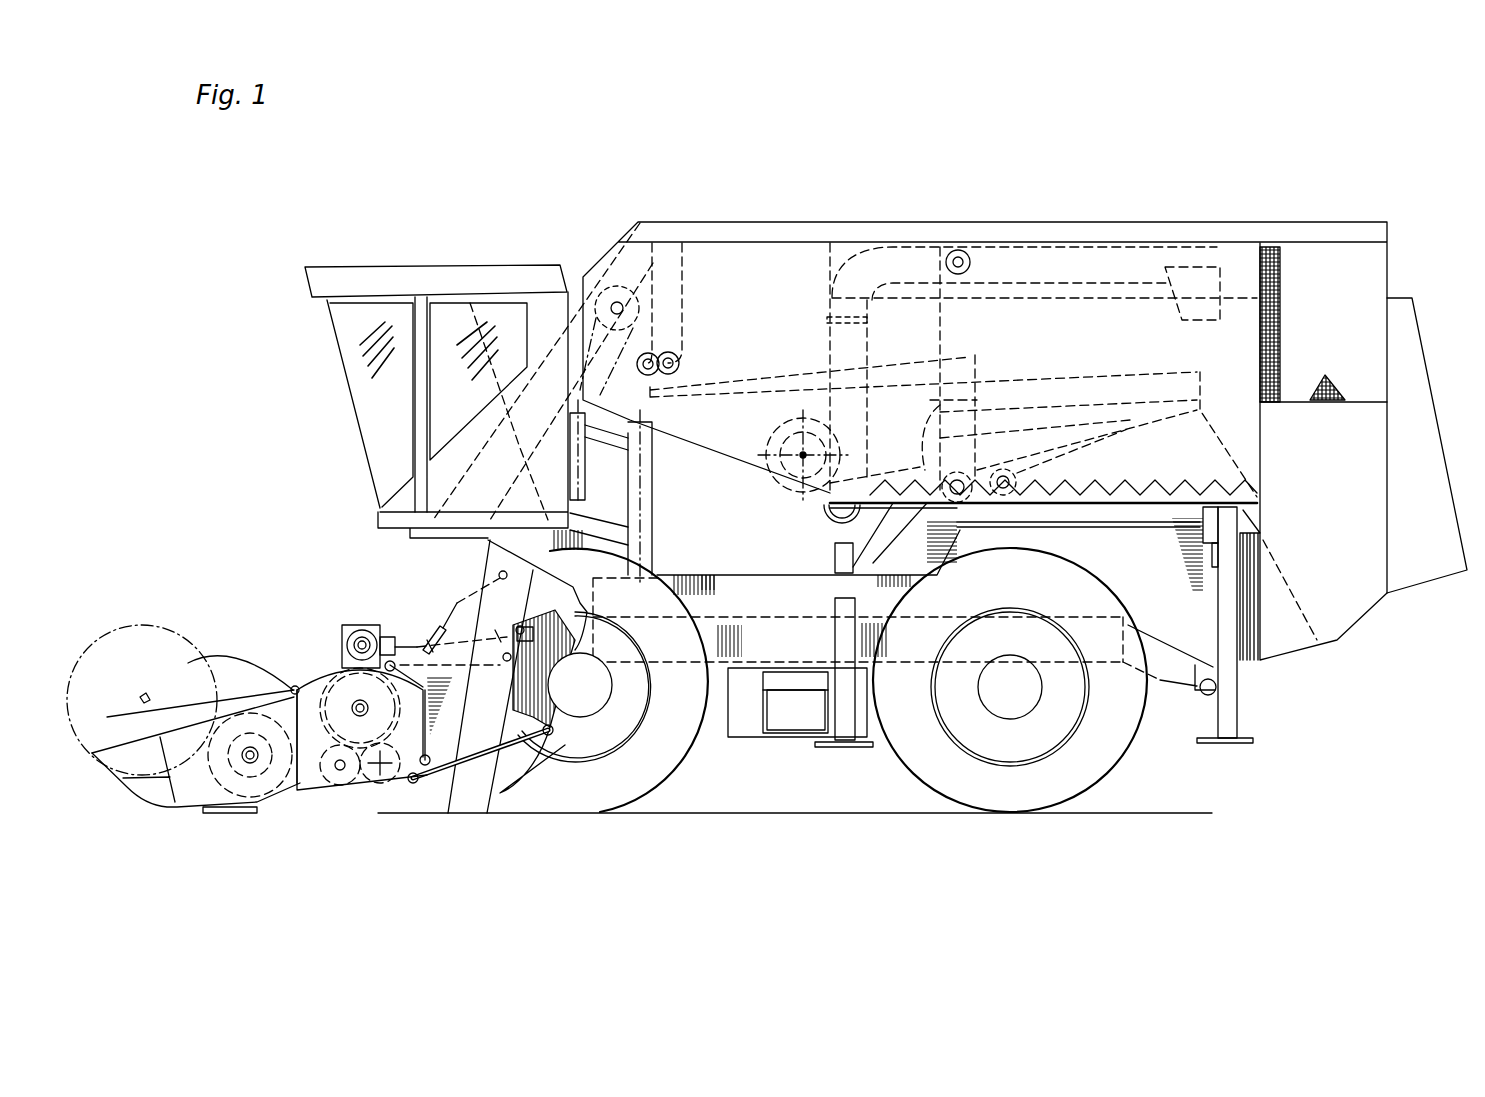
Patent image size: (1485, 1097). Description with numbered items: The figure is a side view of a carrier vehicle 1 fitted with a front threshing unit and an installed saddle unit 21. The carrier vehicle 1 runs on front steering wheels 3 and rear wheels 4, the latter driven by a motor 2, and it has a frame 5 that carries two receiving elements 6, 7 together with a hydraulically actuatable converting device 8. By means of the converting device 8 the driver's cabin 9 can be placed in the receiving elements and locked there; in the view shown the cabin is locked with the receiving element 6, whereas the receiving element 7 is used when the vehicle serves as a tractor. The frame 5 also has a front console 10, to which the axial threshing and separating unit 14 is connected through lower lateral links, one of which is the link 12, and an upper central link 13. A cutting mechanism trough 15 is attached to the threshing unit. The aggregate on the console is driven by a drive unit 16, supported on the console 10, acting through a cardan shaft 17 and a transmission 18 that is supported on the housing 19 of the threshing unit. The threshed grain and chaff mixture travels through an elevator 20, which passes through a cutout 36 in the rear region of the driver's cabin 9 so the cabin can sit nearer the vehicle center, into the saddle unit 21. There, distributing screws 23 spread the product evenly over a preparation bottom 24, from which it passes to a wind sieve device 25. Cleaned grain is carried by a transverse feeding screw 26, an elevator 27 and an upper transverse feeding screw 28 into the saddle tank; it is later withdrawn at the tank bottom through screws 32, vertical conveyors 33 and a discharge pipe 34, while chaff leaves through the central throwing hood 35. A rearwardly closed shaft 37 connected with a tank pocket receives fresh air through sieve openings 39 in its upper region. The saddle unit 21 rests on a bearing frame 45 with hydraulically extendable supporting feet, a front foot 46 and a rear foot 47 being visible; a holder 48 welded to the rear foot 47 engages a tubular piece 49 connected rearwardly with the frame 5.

The carrier vehicle 1 is at (692, 782).
The motor 2 is at (1165, 600).
The front steering wheels 3 is at (655, 783).
The rear wheels 4 is at (907, 762).
The frame 5 is at (783, 645).
The receiving element 6 is at (470, 303).
The receiving element 7 is at (723, 575).
The converting device 8 is at (833, 567).
The driver's cabin 9 is at (348, 332).
The front console 10 is at (530, 720).
The lower lateral link 12 is at (487, 813).
The upper central link 13 is at (448, 813).
The axial threshing and separating unit 14 is at (298, 682).
The cutting mechanism trough 15 is at (197, 716).
The drive unit 16 is at (515, 637).
The cardan shaft 17 is at (440, 607).
The transmission 18 is at (347, 623).
The housing 19 is at (330, 677).
The elevator 20 is at (460, 720).
The saddle unit 21 is at (768, 212).
The distributing screws 23 is at (643, 245).
The preparation bottom 24 is at (763, 567).
The wind sieve device 25 is at (1024, 362).
The transverse feeding screw 26 is at (967, 500).
The elevator 27 is at (842, 466).
The upper transverse feeding screw 28 is at (950, 250).
The screws 32 is at (1103, 490).
The vertical conveyors 33 is at (837, 366).
The discharge pipe 34 is at (1105, 265).
The central throwing hood 35 is at (1397, 327).
The cutout 36 is at (553, 367).
The shaft 37 is at (1308, 553).
The sieve openings 39 is at (1302, 402).
The bearing frame 45 is at (1123, 517).
The supporting foot 46 is at (845, 730).
The supporting foot 47 is at (1225, 730).
The holder 48 is at (1205, 677).
The tubular piece 49 is at (1203, 697).